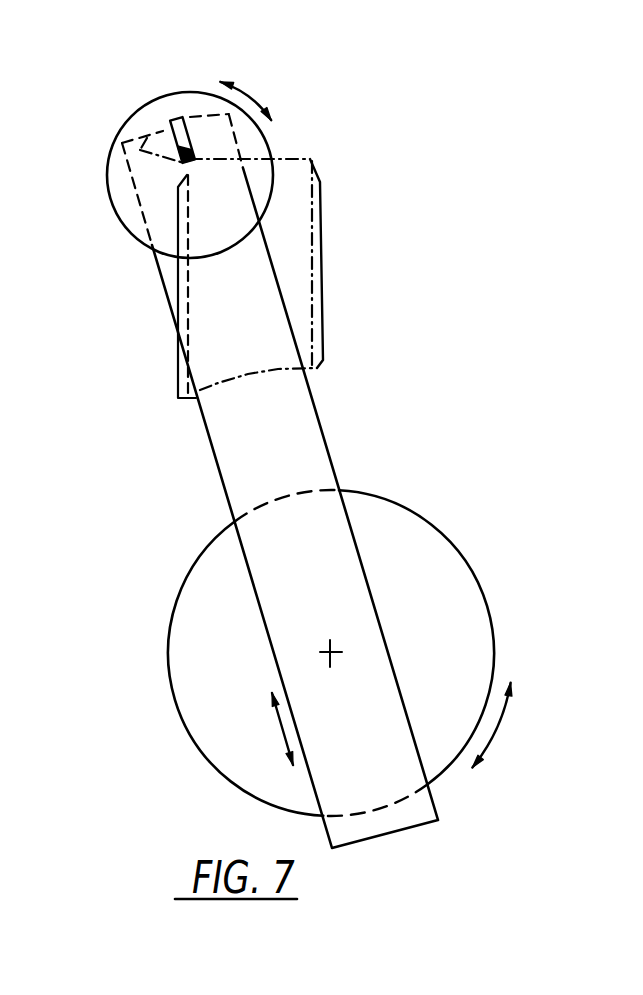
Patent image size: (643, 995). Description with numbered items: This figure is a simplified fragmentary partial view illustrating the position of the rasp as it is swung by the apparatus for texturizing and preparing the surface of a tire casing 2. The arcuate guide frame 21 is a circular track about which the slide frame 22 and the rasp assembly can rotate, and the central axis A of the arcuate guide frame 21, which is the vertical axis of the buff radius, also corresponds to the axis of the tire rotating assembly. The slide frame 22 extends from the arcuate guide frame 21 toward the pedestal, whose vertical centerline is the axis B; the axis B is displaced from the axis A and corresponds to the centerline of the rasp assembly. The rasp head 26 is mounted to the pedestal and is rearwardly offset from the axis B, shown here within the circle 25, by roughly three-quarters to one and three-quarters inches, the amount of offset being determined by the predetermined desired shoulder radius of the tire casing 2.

The tire casing 2 is at (323, 238).
The arcuate guide frame 21 is at (465, 577).
The slide frame 22 is at (327, 423).
The small disc 25 is at (187, 97).
The rasp head 26 is at (172, 122).
The central axis A is at (342, 653).
The vertical axis B is at (190, 172).